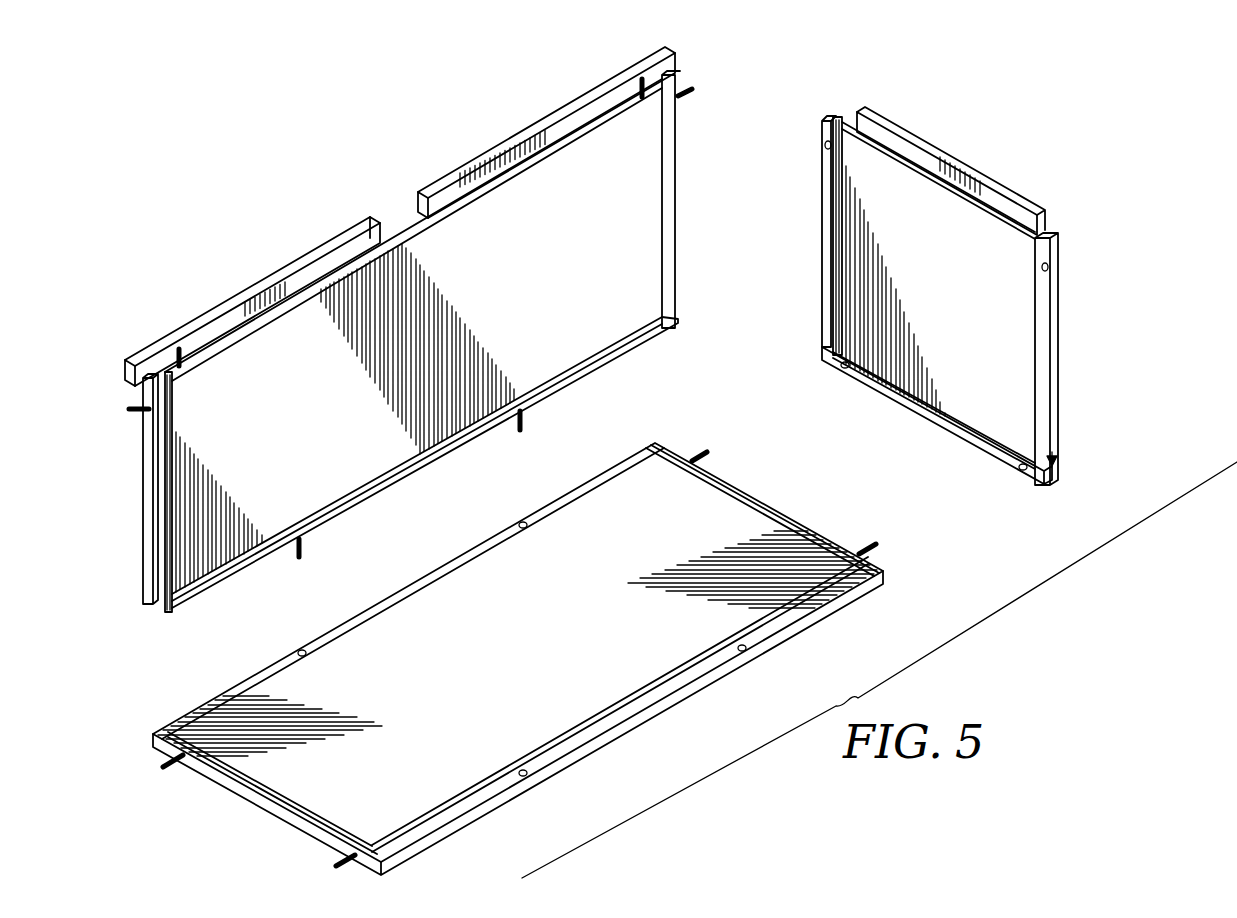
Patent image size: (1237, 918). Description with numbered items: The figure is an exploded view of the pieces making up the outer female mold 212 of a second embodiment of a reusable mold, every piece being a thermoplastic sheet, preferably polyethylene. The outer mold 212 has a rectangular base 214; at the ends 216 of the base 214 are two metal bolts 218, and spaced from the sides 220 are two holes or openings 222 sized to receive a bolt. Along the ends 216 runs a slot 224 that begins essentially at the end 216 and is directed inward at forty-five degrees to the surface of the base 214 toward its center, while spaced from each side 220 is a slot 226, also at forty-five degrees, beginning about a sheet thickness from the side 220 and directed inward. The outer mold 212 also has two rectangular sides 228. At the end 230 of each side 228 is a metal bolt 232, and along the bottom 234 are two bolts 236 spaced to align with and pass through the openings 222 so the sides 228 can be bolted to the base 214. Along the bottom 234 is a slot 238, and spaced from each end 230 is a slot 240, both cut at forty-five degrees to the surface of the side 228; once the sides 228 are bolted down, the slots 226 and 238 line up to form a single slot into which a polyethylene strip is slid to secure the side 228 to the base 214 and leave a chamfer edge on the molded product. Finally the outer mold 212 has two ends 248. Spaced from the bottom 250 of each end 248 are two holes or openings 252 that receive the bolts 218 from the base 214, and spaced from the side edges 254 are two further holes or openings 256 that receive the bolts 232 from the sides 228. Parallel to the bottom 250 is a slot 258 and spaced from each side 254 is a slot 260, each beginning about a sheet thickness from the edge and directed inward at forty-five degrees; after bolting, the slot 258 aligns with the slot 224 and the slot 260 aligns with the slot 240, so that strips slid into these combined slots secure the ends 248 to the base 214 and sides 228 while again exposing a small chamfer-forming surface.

The outer female mold 212 is at (268, 158).
The rectangular base 214 is at (568, 540).
The ends of base 216 is at (240, 790).
The metal bolts 218 is at (332, 860).
The sides of base 220 is at (546, 775).
The holes or openings 222 is at (301, 651).
The slot 224 is at (754, 498).
The slot 226 is at (386, 622).
The rectangular sides 228 is at (634, 177).
The end of side 230 is at (146, 473).
The metal bolt 232 is at (127, 410).
The bottom of side 234 is at (617, 358).
The bolts 236 is at (528, 423).
The slot 238 is at (596, 350).
The slot 240 is at (172, 398).
The ends 248 is at (978, 235).
The bottom of end 250 is at (995, 462).
The holes or openings 252 is at (842, 372).
The side edges of end 254 is at (822, 272).
The side panel holes 256 is at (823, 146).
The slot 258 is at (970, 422).
The slot 260 is at (835, 180).